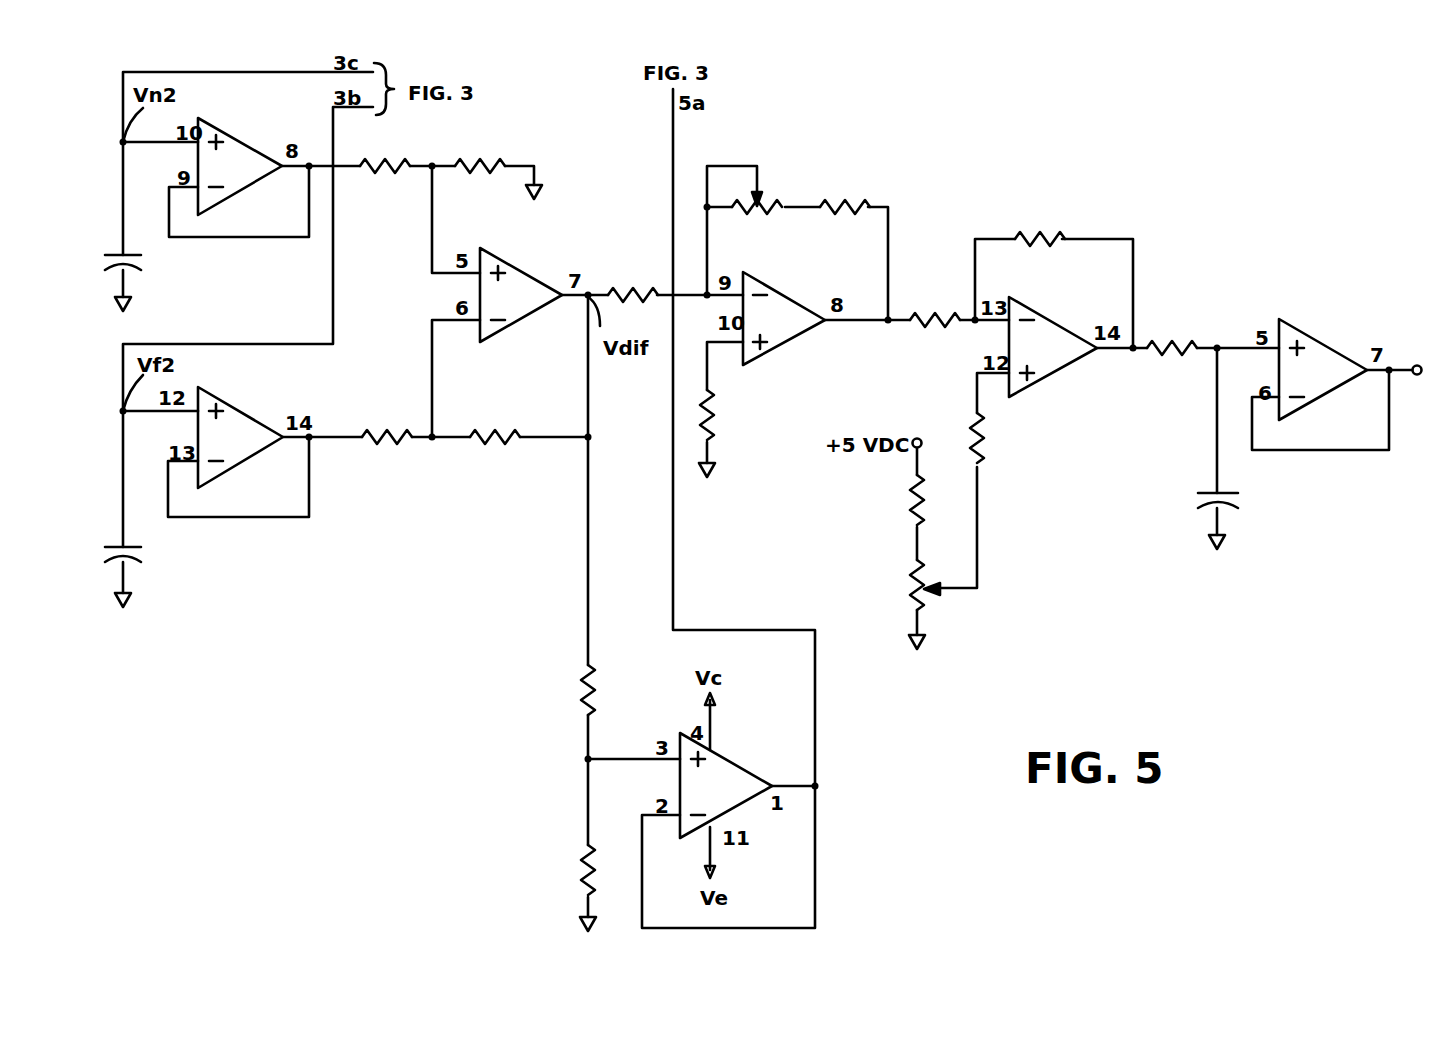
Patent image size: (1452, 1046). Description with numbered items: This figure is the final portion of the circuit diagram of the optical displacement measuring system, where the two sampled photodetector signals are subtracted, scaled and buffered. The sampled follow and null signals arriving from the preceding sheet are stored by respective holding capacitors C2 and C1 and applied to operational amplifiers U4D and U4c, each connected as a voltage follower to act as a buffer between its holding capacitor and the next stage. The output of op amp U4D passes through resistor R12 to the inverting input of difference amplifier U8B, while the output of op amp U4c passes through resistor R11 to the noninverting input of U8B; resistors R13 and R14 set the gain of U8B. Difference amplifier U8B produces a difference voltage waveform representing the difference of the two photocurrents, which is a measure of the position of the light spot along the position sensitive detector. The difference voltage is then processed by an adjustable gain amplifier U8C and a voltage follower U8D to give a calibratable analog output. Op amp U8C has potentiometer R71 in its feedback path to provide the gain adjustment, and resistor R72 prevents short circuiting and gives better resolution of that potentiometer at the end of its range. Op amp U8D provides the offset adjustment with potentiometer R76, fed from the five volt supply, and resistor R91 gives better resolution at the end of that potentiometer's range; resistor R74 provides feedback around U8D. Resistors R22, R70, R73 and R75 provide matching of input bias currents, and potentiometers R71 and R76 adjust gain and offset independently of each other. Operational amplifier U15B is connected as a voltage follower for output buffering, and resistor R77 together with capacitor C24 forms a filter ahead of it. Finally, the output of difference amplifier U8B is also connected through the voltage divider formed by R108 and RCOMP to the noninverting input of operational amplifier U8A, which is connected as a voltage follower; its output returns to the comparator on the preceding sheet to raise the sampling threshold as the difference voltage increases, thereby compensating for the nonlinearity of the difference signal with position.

The operational amplifier U4c is at (239, 171).
The operational amplifier U4D is at (238, 449).
The difference amplifier U8B is at (521, 286).
The adjustable gain amplifier U8C is at (784, 315).
The voltage follower U8D is at (1053, 343).
The operational amplifier U8A is at (732, 785).
The operational amplifier U15B is at (1323, 360).
The resistor R11 is at (382, 180).
The resistor R12 is at (386, 422).
The resistor R13 is at (480, 152).
The resistor R14 is at (495, 424).
The resistor R22 is at (633, 284).
The resistor R70 is at (731, 415).
The potentiometer R71 is at (757, 221).
The resistor R72 is at (844, 196).
The resistor R73 is at (935, 309).
The resistor R74 is at (1040, 227).
The resistor R75 is at (1002, 438).
The potentiometer R76 is at (891, 585).
The resistor R77 is at (1172, 335).
The resistor R91 is at (893, 500).
The resistor R108 is at (556, 690).
The resistor RCOMP is at (546, 870).
The capacitor C1 is at (143, 282).
The capacitor C2 is at (143, 577).
The capacitor C24 is at (1243, 505).